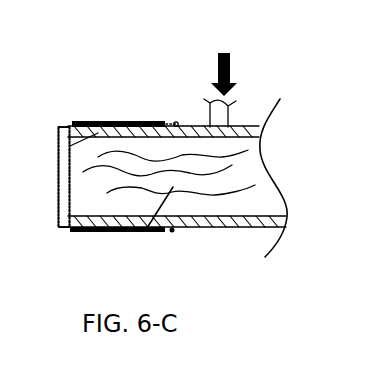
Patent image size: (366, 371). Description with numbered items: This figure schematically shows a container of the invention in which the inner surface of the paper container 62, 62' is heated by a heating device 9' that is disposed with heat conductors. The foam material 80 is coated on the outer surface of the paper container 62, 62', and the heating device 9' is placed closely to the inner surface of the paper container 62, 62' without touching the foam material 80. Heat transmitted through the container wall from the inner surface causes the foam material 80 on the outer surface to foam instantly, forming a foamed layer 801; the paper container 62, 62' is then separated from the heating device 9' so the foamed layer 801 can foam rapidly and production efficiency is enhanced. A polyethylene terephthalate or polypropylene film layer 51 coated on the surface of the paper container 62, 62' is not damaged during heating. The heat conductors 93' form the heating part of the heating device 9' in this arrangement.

The foam material 80 is at (108, 126).
The foamed layer 801 is at (122, 177).
The paper container 62 is at (126, 102).
The paper container 62' is at (126, 124).
The heating device 9' is at (177, 144).
The polyethylene terephthalate or polypropylene film layer 51 is at (58, 155).
The pin 93' is at (138, 224).